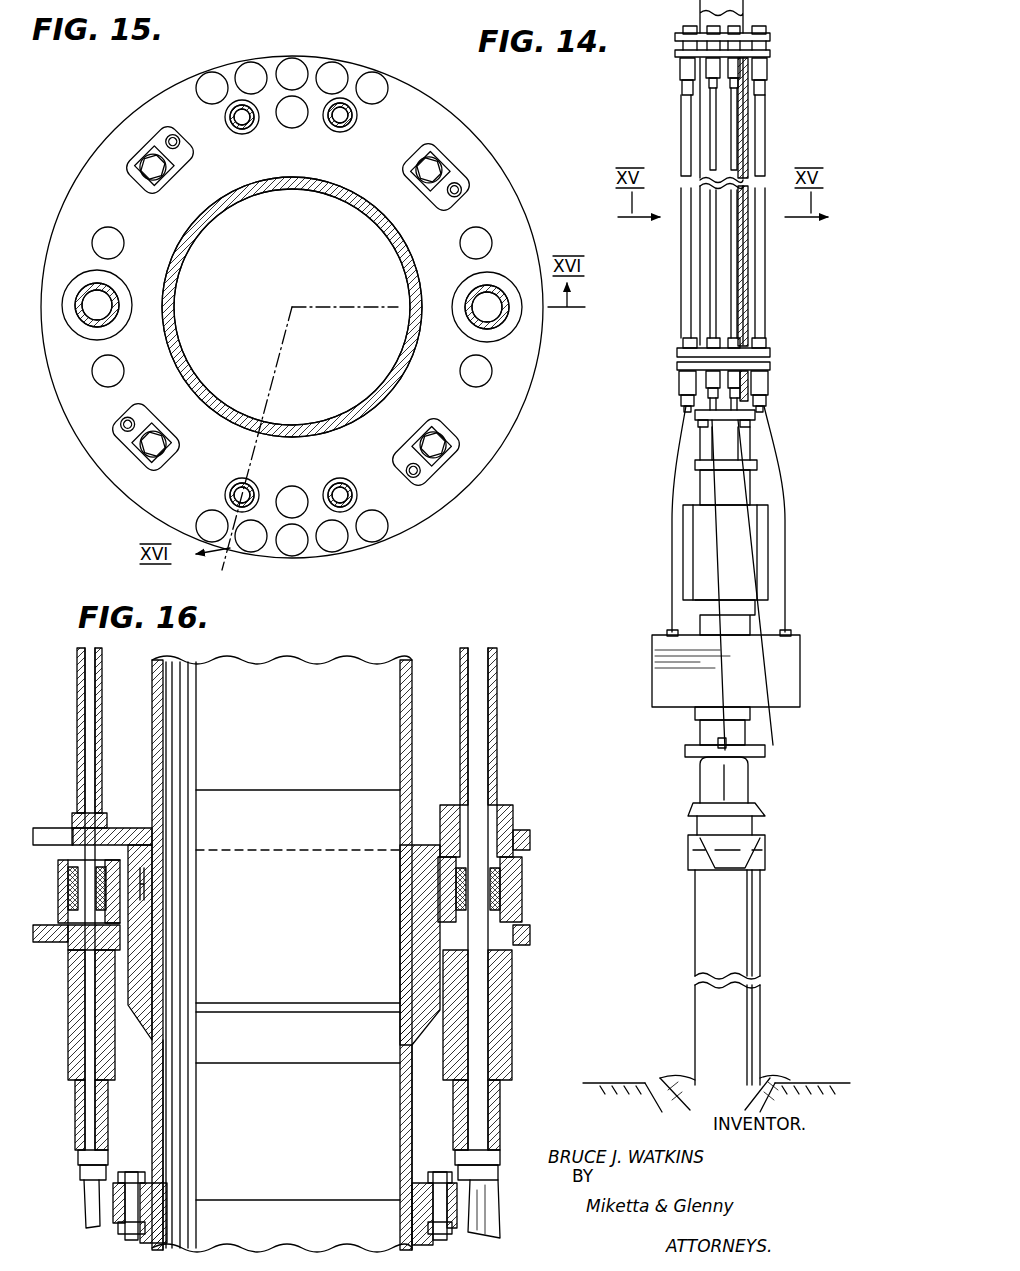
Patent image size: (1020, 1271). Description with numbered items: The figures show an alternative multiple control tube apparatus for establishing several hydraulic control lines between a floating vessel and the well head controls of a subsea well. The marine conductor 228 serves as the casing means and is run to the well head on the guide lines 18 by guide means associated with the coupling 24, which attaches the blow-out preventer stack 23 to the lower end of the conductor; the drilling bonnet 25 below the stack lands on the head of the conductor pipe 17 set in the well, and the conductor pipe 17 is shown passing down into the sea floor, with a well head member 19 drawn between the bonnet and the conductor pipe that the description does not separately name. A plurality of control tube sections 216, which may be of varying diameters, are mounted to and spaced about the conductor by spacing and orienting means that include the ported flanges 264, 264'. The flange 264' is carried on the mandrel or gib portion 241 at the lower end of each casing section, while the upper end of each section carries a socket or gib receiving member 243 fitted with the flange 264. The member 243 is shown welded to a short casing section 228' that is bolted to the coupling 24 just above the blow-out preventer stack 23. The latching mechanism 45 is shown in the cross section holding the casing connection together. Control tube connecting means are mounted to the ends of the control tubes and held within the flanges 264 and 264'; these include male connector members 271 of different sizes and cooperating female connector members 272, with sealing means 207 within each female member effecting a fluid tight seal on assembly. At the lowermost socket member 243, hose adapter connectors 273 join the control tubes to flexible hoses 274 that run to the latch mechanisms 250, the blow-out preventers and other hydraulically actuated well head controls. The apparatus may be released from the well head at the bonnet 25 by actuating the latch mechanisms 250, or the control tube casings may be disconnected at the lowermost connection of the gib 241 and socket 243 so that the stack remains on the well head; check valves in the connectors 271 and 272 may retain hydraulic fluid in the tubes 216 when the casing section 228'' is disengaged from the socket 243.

In FIG. 14, the conductor pipe 17 is at (705, 912).
In FIG. 14, the guide lines 18 is at (745, 808).
In FIG. 14, the slip bowl / casing hanger 19 is at (762, 853).
In FIG. 14, the blow-out preventer stack 23 is at (650, 662).
In FIG. 14, the coupling 24 is at (752, 440).
In FIG. 16, the coupling 24 is at (165, 1230).
In FIG. 14, the drilling bonnet 25 is at (704, 778).
In FIG. 15, the latching mechanism 45 is at (130, 140).
In FIG. 16, the sealing means 207 is at (60, 882).
In FIG. 15, the control tube sections 216 is at (258, 124).
In FIG. 14, the control tube sections 216 is at (760, 138).
In FIG. 16, the control tube sections 216 is at (78, 714).
In FIG. 14, the marine conductor 228 is at (692, 172).
In FIG. 16, the marine conductor 228 is at (282, 954).
In FIG. 14, the short casing section 228' is at (766, 404).
In FIG. 16, the short casing section 228' is at (287, 1145).
In FIG. 15, the casing section 228'' is at (292, 307).
In FIG. 16, the mandrel or gib portion 241 is at (165, 865).
In FIG. 14, the socket or gib receiving member 243 is at (749, 67).
In FIG. 16, the socket or gib receiving member 243 is at (142, 972).
In FIG. 14, the latch mechanisms 250 is at (770, 748).
In FIG. 14, the ported flange 264 is at (701, 210).
In FIG. 16, the ported flange 264 is at (309, 937).
In FIG. 15, the ported flange 264' is at (314, 307).
In FIG. 14, the ported flange 264' is at (755, 194).
In FIG. 16, the ported flange 264' is at (549, 842).
In FIG. 14, the male connector members 271 is at (688, 27).
In FIG. 16, the male connector members 271 is at (72, 832).
In FIG. 15, the female connector members 272 is at (236, 128).
In FIG. 14, the female connector members 272 is at (682, 78).
In FIG. 16, the female connector members 272 is at (70, 966).
In FIG. 14, the hose adapter connectors 273 is at (681, 400).
In FIG. 16, the hose adapter connectors 273 is at (76, 1112).
In FIG. 14, the flexible hoses 274 is at (680, 492).
In FIG. 16, the flexible hoses 274 is at (86, 1195).